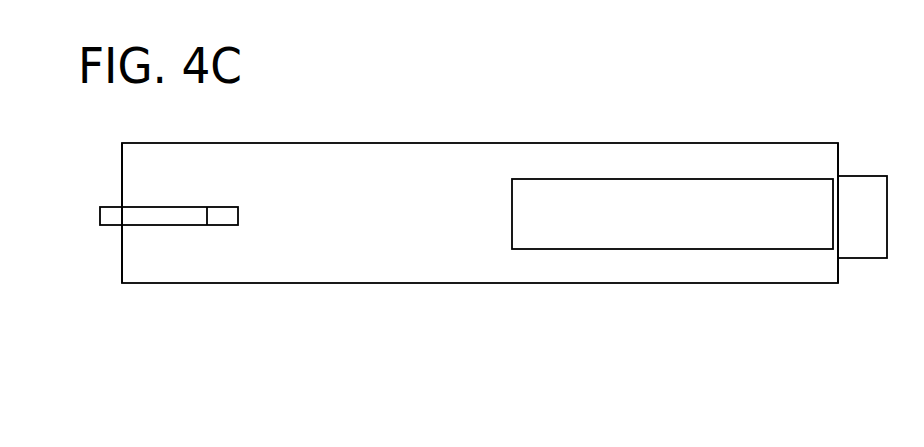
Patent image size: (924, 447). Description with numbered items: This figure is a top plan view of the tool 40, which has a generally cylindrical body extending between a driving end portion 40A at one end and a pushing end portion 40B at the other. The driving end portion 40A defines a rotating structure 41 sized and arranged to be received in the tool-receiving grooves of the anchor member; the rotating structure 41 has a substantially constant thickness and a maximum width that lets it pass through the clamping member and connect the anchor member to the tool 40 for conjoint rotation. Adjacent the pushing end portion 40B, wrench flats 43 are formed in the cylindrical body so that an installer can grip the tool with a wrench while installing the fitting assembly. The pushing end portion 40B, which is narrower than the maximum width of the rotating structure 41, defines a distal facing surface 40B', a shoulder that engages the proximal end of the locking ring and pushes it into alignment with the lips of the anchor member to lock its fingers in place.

The tool 40 is at (510, 314).
The driving end portion 40A is at (135, 269).
The pushing end portion 40B is at (813, 251).
The distal facing surface 40B' is at (862, 163).
The rotating structure 41 is at (190, 215).
The wrench flats 43 is at (662, 203).